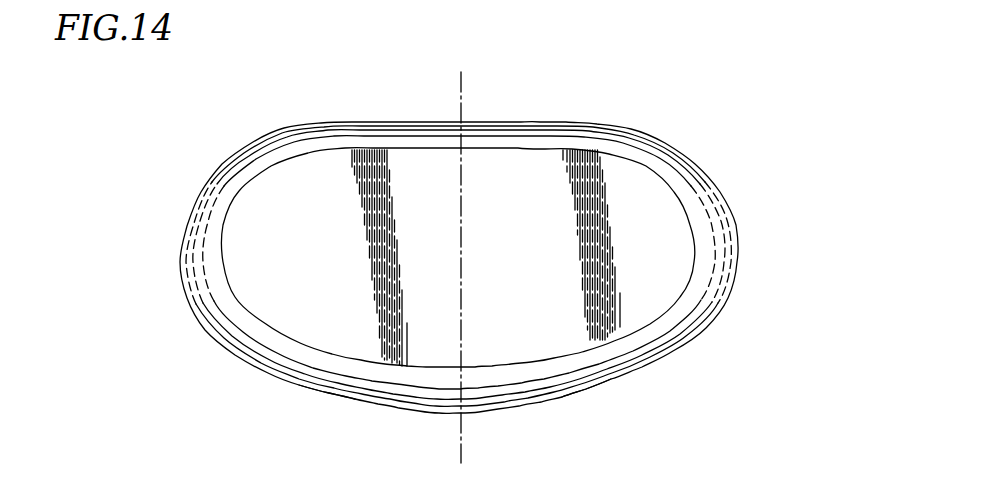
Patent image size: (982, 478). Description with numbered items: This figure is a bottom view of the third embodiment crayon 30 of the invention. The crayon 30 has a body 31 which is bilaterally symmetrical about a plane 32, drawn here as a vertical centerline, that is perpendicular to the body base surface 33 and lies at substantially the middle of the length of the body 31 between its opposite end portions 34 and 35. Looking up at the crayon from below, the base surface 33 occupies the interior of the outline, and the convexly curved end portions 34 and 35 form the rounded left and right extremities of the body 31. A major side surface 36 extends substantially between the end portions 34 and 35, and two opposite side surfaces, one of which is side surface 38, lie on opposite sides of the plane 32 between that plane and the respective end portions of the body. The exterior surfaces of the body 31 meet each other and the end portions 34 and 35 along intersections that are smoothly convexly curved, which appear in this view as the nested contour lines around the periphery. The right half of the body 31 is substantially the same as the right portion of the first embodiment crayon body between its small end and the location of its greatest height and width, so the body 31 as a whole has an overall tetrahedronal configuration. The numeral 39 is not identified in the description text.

The crayon 30 is at (722, 129).
The body 31 is at (634, 190).
The plane 32 is at (463, 88).
The body base surface 33 is at (526, 262).
The end portion 34 is at (181, 232).
The end portion 35 is at (739, 238).
The major side surface 36 is at (415, 121).
The side surface 38 is at (572, 399).
The front side 39 is at (344, 399).